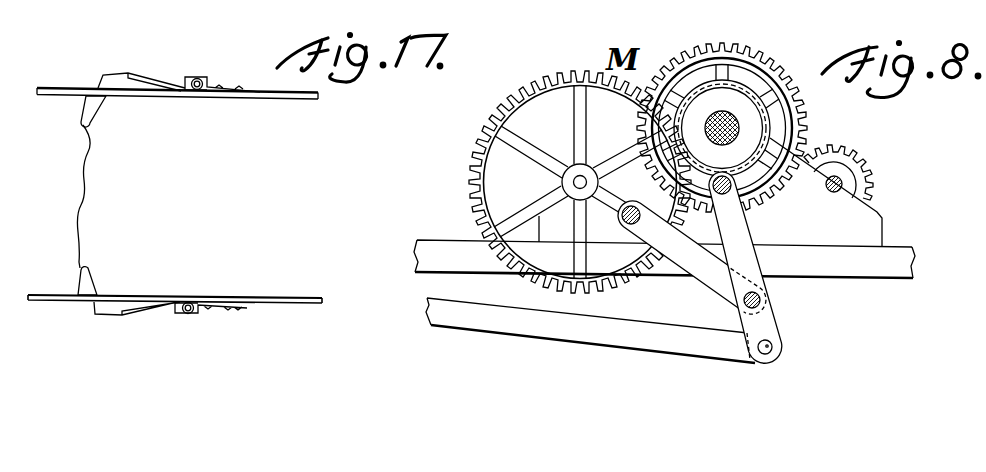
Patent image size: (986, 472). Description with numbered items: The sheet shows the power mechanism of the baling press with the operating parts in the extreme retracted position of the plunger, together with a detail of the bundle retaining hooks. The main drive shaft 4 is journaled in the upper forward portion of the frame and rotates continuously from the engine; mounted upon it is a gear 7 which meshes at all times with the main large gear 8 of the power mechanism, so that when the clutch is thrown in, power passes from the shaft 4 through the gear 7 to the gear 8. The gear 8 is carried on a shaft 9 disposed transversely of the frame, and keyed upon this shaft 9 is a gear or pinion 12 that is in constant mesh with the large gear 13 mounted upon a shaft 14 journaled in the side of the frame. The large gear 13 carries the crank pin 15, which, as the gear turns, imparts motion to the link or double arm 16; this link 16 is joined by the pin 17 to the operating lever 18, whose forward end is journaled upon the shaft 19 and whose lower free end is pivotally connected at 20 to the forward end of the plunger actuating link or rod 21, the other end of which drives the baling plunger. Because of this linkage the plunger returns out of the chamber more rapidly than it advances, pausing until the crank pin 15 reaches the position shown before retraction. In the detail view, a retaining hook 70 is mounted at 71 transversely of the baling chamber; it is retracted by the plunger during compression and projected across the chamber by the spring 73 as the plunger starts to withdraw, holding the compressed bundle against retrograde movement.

In FIG. 8, the main drive shaft 4 is at (843, 183).
In FIG. 8, the gear 7 is at (852, 146).
In FIG. 8, the main large gear 8 is at (783, 72).
In FIG. 8, the shaft 9 is at (722, 125).
In FIG. 8, the gear or pinion 12 is at (755, 120).
In FIG. 8, the large gear 13 is at (522, 85).
In FIG. 8, the shaft 14 is at (575, 181).
In FIG. 8, the crank pin 15 is at (636, 206).
In FIG. 8, the link or double arm 16 is at (712, 270).
In FIG. 8, the pin 17 is at (761, 298).
In FIG. 8, the operating lever 18 is at (763, 322).
In FIG. 8, the shaft 19 is at (731, 183).
In FIG. 8, the pivotal connection 20 is at (773, 348).
In FIG. 8, the plunger actuating link or rod 21 is at (590, 328).
In FIG. 17, the retaining hook 70 is at (93, 110).
In FIG. 17, the hook mounting 71 is at (201, 78).
In FIG. 17, the spring 73 is at (157, 76).